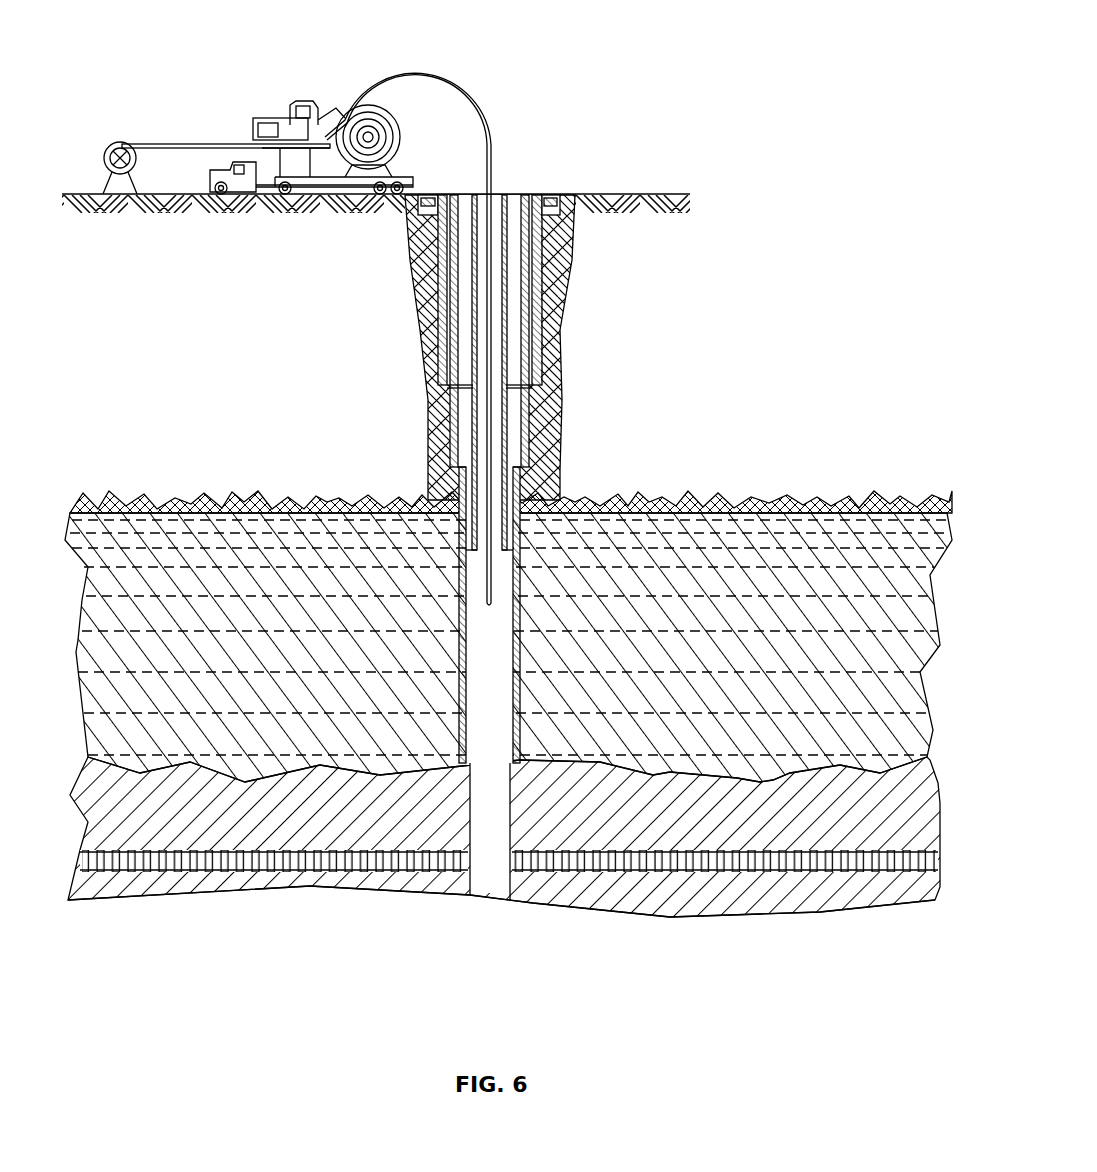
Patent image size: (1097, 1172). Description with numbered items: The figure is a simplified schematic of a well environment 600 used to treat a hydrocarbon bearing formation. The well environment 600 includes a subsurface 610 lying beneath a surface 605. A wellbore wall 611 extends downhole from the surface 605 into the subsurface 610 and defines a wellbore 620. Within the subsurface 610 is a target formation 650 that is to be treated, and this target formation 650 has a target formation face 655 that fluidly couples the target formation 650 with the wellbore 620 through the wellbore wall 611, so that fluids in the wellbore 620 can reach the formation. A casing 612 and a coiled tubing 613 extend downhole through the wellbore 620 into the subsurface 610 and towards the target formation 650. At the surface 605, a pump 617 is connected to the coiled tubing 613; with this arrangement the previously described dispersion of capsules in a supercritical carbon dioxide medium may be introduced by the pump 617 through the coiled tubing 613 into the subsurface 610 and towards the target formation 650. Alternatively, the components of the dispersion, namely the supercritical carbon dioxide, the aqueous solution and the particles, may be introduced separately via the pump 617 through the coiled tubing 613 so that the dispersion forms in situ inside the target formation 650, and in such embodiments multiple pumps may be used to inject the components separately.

The well environment 600 is at (776, 88).
The surface 605 is at (662, 153).
The subsurface 610 is at (668, 596).
The wellbore wall 611 is at (536, 446).
The casing 612 is at (505, 292).
The coiled tubing 613 is at (374, 105).
The pump 617 is at (110, 150).
The wellbore 620 is at (510, 824).
The target formation 650 is at (940, 861).
The target formation face 655 is at (510, 861).